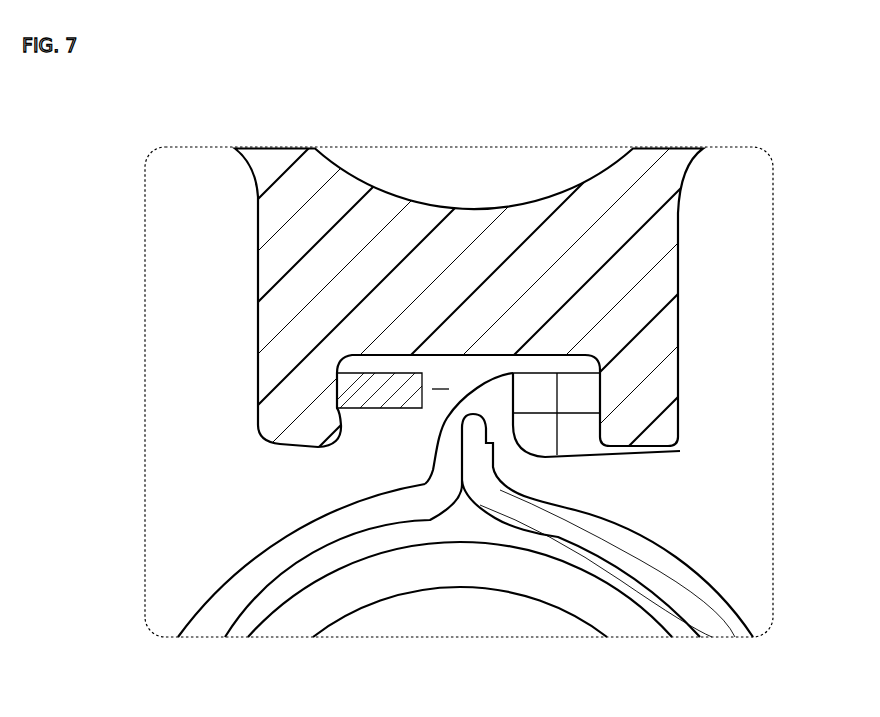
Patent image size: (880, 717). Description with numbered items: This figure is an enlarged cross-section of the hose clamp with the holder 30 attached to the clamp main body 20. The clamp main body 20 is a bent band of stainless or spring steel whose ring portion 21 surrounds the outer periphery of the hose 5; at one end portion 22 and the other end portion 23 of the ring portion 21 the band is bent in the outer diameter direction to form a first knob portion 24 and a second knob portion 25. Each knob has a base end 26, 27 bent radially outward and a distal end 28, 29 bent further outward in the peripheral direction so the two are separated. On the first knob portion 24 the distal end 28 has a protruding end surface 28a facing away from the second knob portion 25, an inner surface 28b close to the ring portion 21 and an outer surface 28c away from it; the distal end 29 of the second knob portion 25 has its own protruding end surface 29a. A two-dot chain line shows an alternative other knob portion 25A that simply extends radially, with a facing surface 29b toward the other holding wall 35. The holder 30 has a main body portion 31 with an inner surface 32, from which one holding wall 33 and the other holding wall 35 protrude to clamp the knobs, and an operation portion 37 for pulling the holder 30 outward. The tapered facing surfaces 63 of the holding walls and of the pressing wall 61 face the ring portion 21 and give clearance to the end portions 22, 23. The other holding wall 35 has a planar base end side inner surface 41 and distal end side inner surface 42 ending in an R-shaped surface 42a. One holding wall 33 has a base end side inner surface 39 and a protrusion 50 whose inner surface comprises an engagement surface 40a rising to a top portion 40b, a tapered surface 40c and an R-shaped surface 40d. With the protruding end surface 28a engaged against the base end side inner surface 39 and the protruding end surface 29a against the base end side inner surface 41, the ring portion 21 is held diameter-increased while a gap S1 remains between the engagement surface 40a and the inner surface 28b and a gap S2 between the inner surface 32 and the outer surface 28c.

The hose 5 is at (573, 595).
The clamp main body 20 is at (710, 578).
The ring portion 21 is at (187, 617).
The one end portion 22 is at (720, 630).
The other end portion 23 is at (213, 620).
The first knob portion 24 is at (374, 375).
The second knob portion 25 is at (640, 292).
The other knob portion 25A is at (595, 497).
The base end 26 is at (480, 445).
The base end 27 is at (440, 455).
The distal end 28 is at (333, 377).
The protruding end surface 28a is at (335, 402).
The inner surface 28b is at (380, 412).
The outer surface 28c is at (355, 358).
The distal end 29 is at (580, 402).
The protruding end surface 29a is at (680, 332).
The facing surface 29b is at (640, 466).
The holder 30 is at (700, 187).
The main body portion 31 is at (613, 238).
The inner surface 32 is at (470, 362).
The one holding wall 33 is at (338, 418).
The other holding wall 35 is at (610, 400).
The operation portion 37 is at (645, 158).
The base end side inner surface 39 is at (336, 393).
The engagement surface 40a is at (333, 425).
The top portion 40b is at (325, 446).
The tapered surface 40c is at (339, 440).
The R-shaped surface 40d is at (335, 445).
The base end side inner surface 41 is at (585, 367).
The distal end side inner surface 42 is at (605, 427).
The R-shaped surface 42a is at (600, 453).
The protrusion 50 is at (330, 440).
The pressing wall 61 is at (563, 456).
The facing surface 63 is at (590, 472).
The gap S1 is at (350, 413).
The gap S2 is at (345, 355).